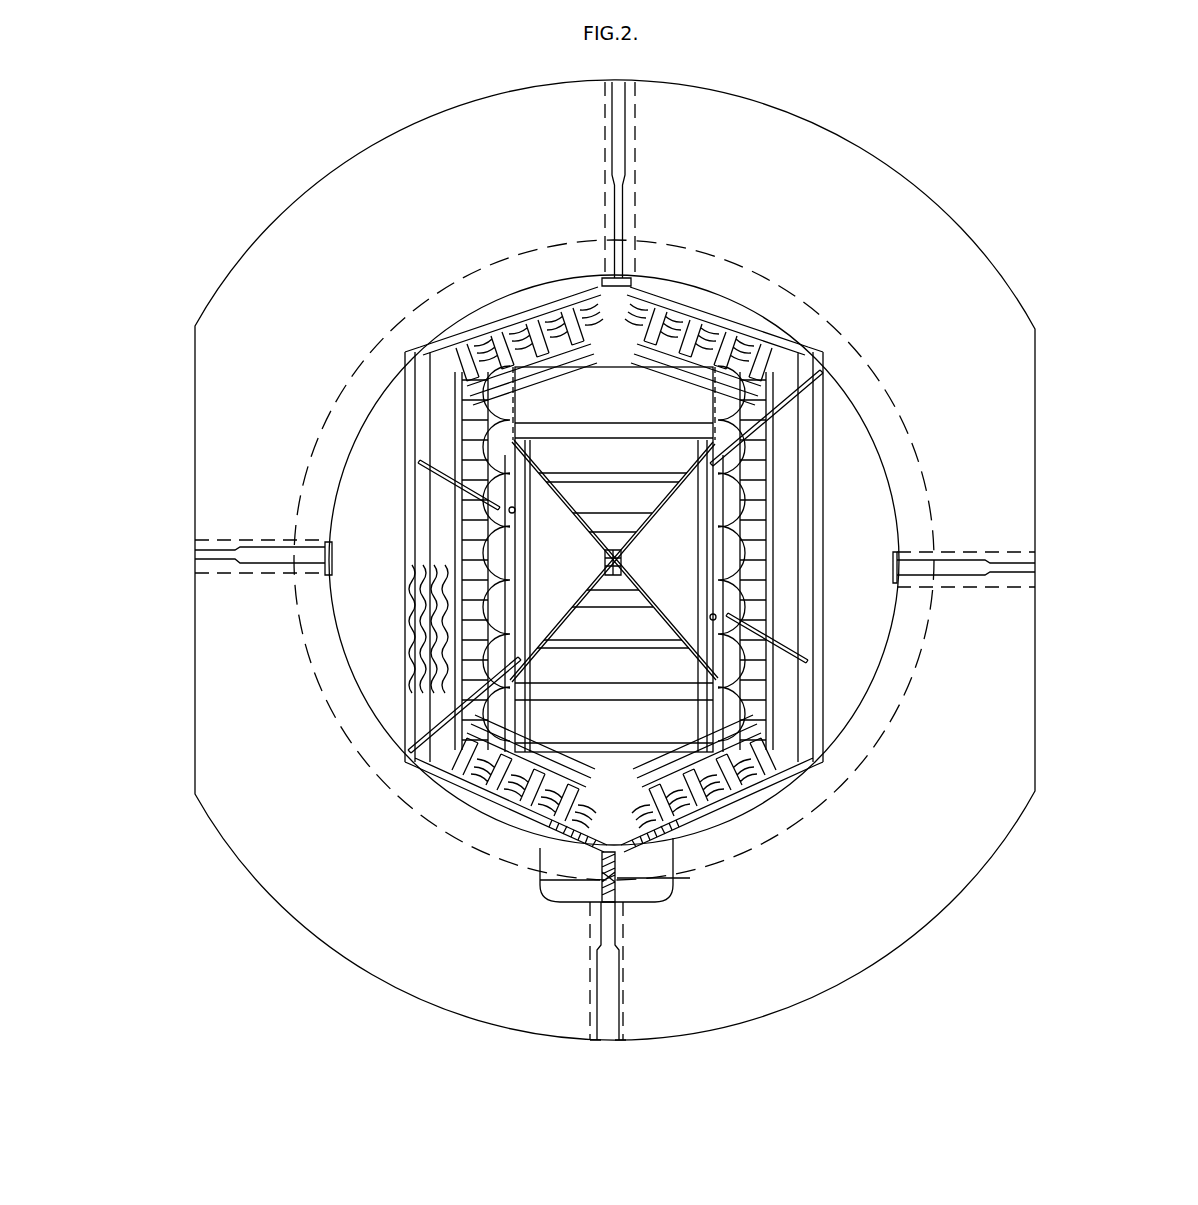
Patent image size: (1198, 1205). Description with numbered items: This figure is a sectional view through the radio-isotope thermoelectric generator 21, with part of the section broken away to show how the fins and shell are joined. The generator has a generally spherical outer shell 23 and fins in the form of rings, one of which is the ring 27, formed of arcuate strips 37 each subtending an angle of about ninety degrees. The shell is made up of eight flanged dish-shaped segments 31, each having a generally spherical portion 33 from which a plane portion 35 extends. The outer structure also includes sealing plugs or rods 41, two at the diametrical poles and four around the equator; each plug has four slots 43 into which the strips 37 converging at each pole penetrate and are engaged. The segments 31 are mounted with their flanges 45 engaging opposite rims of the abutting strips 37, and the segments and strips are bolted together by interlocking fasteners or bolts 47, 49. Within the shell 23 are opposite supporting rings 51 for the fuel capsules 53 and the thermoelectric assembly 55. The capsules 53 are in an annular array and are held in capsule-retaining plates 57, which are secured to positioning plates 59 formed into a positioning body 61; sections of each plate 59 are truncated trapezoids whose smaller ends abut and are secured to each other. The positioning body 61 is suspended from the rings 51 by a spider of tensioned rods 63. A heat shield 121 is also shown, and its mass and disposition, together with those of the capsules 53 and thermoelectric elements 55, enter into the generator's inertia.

The radio-isotope thermoelectric generator 21 is at (458, 1050).
The outer shell 23 is at (527, 823).
The ring 27 is at (325, 935).
The flanged dish-shaped segment 31 is at (373, 360).
The spherical portion 33 is at (350, 700).
The plane portion 35 is at (500, 815).
The arcuate strip 37 is at (596, 890).
The sealing plug 41 is at (272, 545).
The slot 43 is at (228, 540).
The flange 45 is at (598, 858).
The interlocking fastener 47 is at (603, 872).
The interlocking fastener 49 is at (620, 880).
The supporting ring 51 is at (406, 684).
The fuel capsule 53 is at (449, 716).
The thermoelectric assembly 55 is at (650, 810).
The capsule-retaining plate 57 is at (756, 428).
The positioning plate 59 is at (692, 470).
The positioning body 61 is at (620, 548).
The tensioned rod 63 is at (788, 653).
The heat shield 121 is at (445, 572).